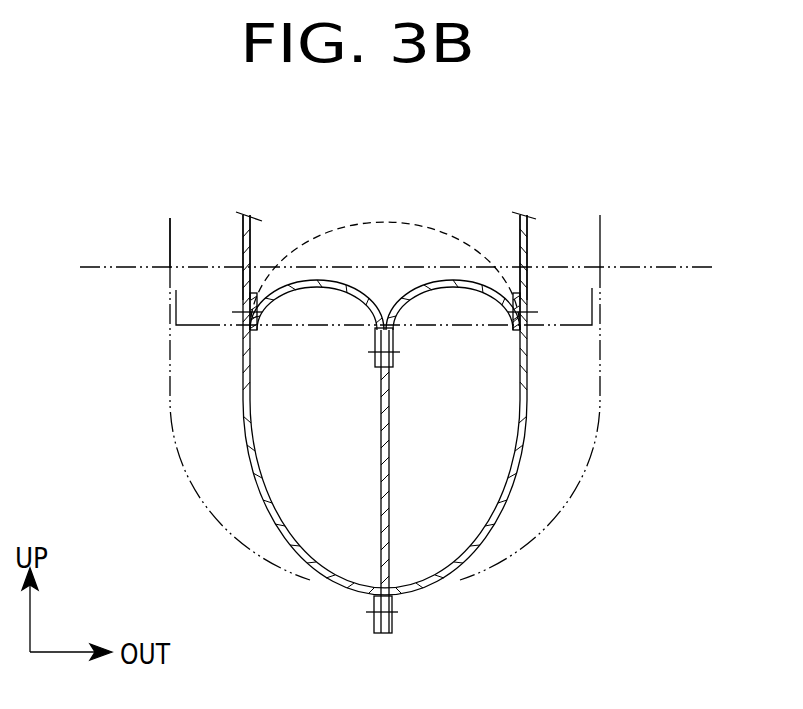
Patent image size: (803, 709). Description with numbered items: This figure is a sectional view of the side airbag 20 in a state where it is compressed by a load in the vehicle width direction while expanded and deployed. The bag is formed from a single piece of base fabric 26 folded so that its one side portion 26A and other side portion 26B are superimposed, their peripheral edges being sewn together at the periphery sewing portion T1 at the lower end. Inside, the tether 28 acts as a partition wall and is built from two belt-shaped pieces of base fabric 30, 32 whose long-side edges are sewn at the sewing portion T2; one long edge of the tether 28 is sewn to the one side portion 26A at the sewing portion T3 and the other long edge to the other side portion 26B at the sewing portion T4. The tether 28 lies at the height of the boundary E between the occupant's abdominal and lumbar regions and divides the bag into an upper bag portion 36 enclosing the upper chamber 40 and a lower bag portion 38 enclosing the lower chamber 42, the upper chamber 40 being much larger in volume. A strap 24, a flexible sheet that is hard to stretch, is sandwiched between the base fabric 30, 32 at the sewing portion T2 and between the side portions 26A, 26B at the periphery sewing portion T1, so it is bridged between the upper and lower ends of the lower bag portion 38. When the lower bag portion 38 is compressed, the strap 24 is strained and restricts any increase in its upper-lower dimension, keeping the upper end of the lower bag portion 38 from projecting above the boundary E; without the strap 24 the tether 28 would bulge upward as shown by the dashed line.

The side airbag 20 is at (530, 405).
The strap 24 is at (390, 457).
The base fabric 26 is at (243, 413).
The one side portion 26A is at (244, 238).
The other side portion 26B is at (597, 246).
The tether 28 is at (383, 222).
The base fabric 30 is at (303, 293).
The base fabric 32 is at (470, 293).
The upper bag portion 36 is at (167, 272).
The lower bag portion 38 is at (260, 497).
The upper chamber 40 is at (302, 230).
The lower chamber 42 is at (362, 485).
The boundary E is at (668, 263).
The periphery sewing portion T1 is at (392, 613).
The sewing portion T2 is at (372, 353).
The sewing portion T3 is at (237, 315).
The sewing portion T4 is at (537, 317).